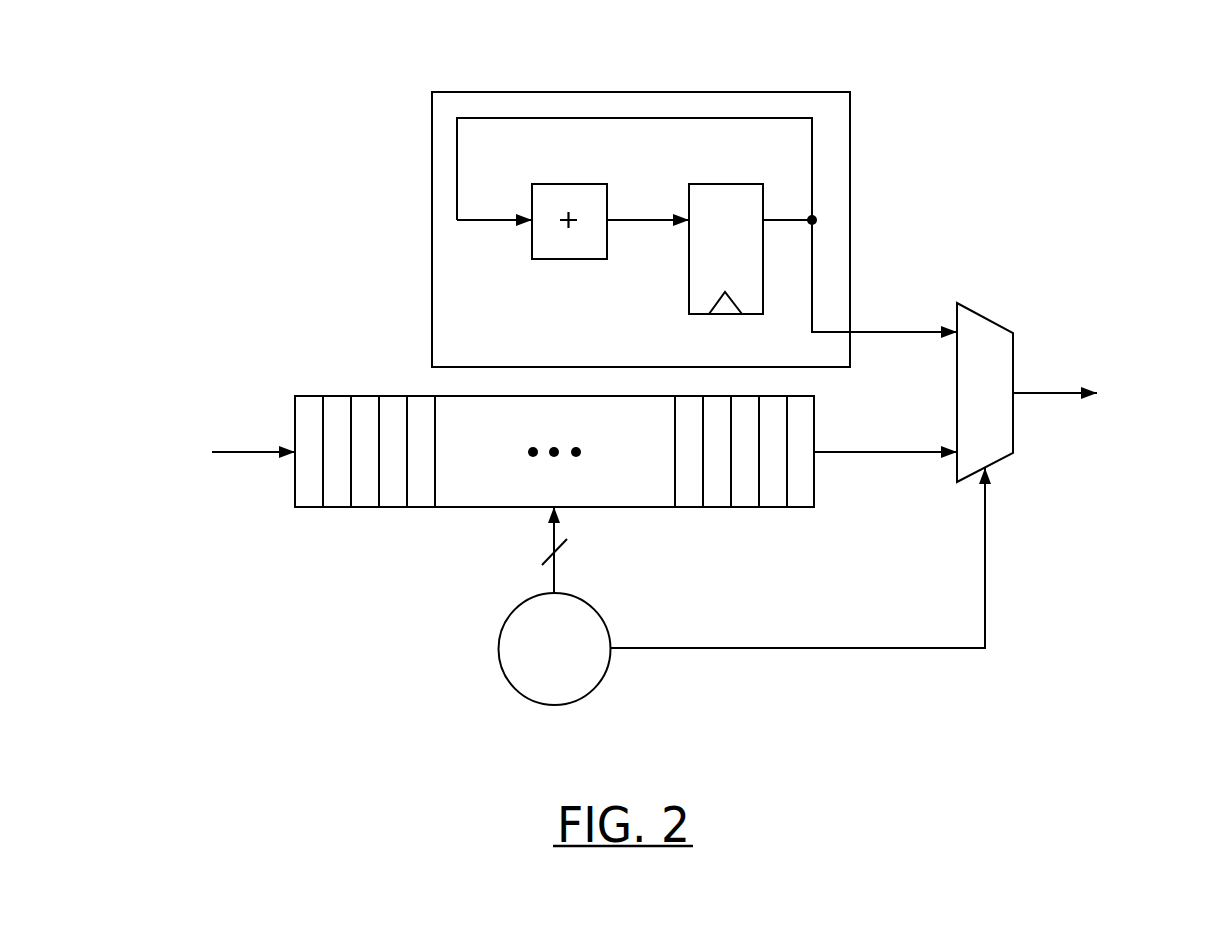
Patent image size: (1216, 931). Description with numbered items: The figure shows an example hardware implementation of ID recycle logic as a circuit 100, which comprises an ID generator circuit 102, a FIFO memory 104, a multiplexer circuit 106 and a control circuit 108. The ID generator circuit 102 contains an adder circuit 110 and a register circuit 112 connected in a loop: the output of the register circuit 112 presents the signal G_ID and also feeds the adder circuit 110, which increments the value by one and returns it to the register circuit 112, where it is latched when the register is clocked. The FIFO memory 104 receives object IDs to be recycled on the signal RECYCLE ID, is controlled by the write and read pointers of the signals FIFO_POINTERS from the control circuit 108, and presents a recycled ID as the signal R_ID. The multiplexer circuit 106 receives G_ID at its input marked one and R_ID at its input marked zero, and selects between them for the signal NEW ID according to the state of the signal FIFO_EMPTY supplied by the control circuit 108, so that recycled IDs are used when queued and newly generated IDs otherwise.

The circuit 100 is at (363, 47).
The ID generator circuit 102 is at (540, 92).
The FIFO memory 104 is at (392, 396).
The multiplexer circuit 106 is at (993, 322).
The control circuit 108 is at (537, 595).
The adder circuit 110 is at (560, 183).
The register circuit 112 is at (720, 183).